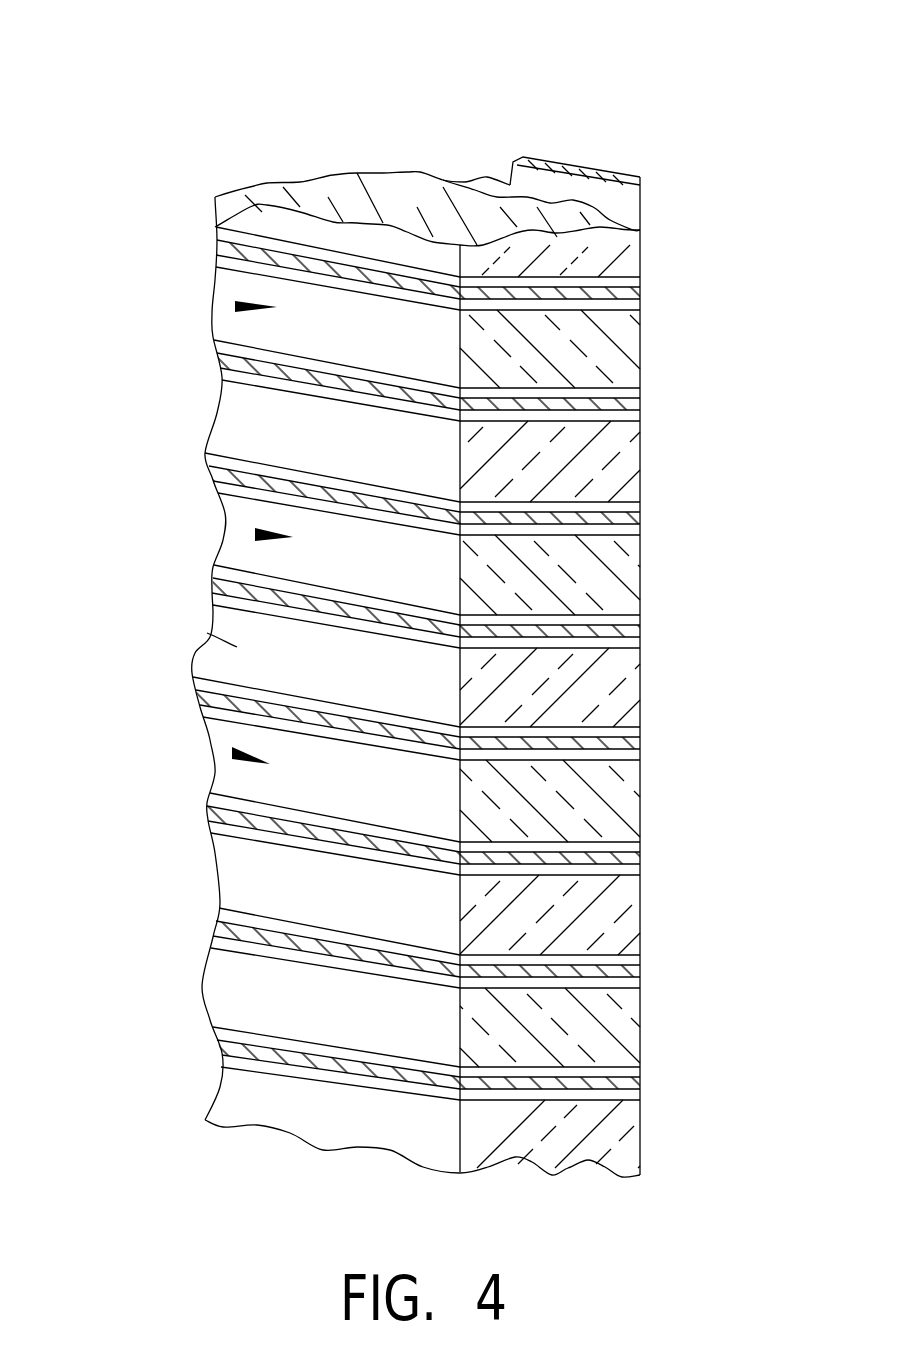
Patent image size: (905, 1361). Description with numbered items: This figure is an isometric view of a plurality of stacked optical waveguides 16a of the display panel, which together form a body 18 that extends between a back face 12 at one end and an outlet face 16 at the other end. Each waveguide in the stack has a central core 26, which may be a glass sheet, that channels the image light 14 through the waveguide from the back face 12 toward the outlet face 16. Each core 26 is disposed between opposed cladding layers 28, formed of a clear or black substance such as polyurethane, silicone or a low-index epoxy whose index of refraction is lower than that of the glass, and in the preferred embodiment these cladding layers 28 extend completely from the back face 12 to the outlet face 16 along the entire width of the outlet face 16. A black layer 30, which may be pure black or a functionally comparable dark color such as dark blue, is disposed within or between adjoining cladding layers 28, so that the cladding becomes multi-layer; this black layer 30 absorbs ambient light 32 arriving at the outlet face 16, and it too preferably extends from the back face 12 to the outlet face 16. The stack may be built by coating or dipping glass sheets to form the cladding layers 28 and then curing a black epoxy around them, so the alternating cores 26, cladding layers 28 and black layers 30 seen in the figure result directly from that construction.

The back face 12 is at (642, 308).
The image light 14 is at (233, 305).
The outlet face 16 is at (253, 533).
The stacked optical waveguides 16a is at (207, 633).
The body 18 is at (435, 203).
The central core 26 is at (643, 688).
The cladding layers 28 is at (633, 760).
The black layer 30 is at (643, 633).
The ambient light 32 is at (230, 752).